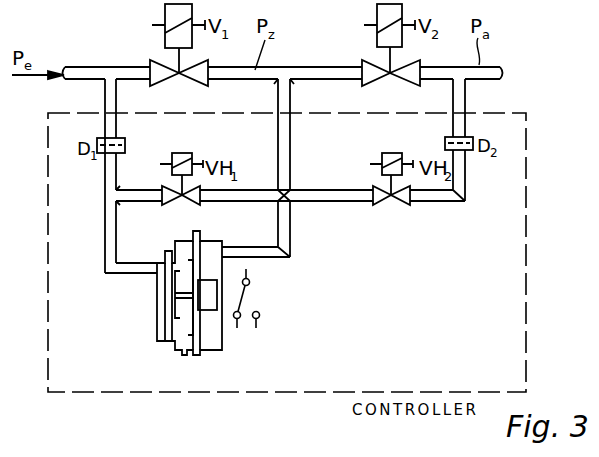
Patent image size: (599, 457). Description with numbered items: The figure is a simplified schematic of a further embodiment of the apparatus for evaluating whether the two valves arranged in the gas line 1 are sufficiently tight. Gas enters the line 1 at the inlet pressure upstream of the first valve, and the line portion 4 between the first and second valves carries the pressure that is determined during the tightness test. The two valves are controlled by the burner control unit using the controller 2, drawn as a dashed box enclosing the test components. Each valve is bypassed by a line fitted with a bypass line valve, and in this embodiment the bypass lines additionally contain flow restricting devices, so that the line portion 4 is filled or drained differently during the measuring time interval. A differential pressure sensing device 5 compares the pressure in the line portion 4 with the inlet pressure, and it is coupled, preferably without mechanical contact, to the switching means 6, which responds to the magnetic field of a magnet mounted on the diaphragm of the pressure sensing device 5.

The gas line 1 is at (118, 66).
The controller 2 is at (527, 188).
The line portion 4 is at (318, 64).
The pressure sensing device 5 is at (218, 335).
The switching means 6 is at (249, 297).